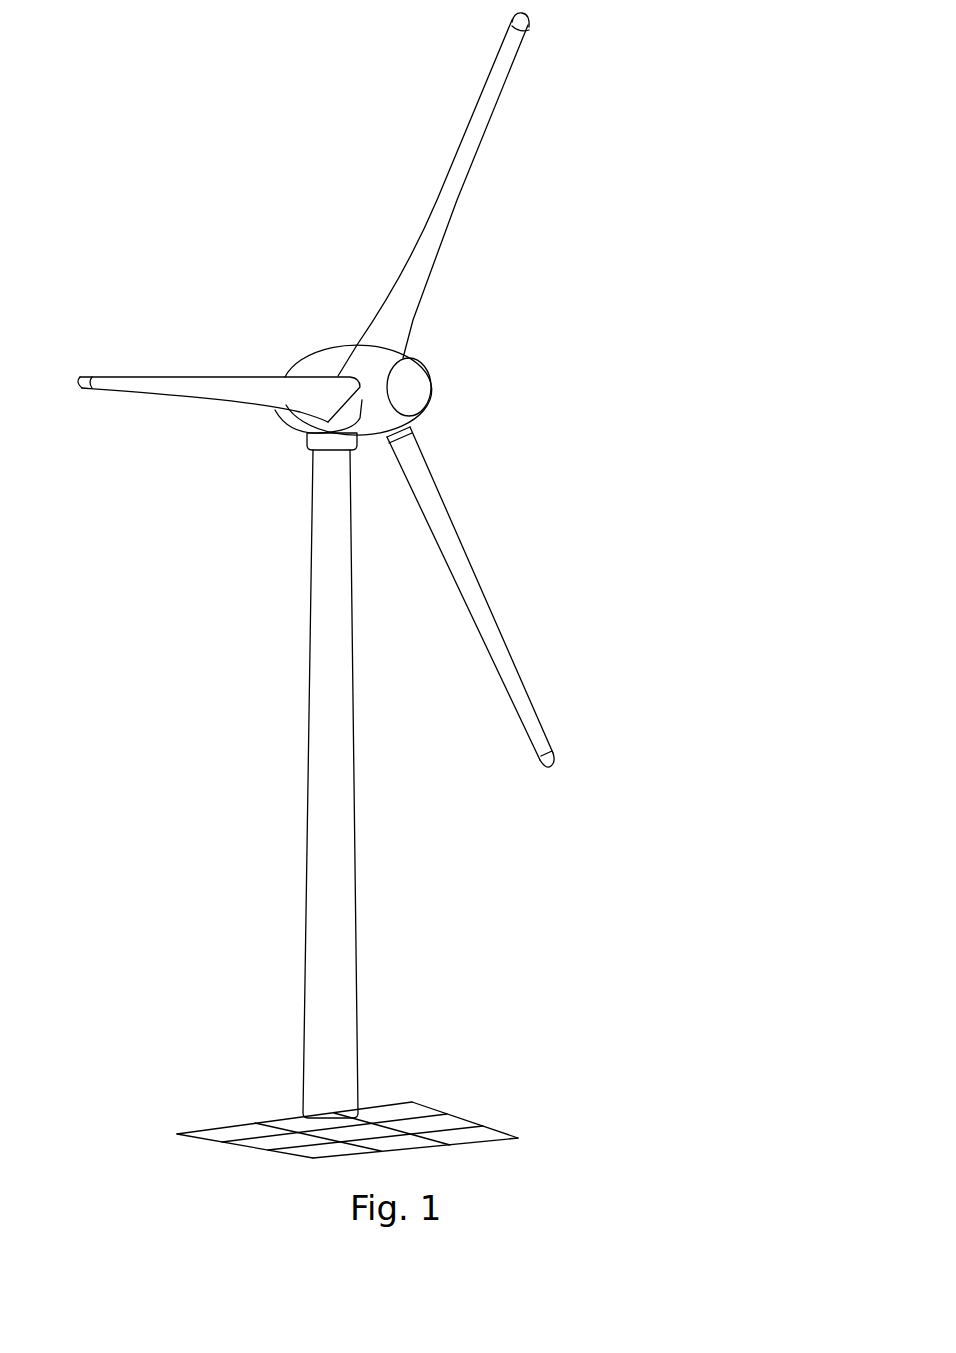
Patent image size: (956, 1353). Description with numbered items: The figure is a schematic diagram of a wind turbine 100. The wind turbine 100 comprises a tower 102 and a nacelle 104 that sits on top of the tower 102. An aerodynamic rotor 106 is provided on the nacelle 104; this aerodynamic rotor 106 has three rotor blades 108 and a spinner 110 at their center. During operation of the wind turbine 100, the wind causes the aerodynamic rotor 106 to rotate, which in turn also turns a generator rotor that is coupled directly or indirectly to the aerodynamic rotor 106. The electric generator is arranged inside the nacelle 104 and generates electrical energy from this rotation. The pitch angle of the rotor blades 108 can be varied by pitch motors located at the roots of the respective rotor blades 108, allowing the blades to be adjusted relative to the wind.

The wind turbine 100 is at (262, 521).
The tower 102 is at (337, 885).
The nacelle 104 is at (325, 362).
The aerodynamic rotor 106 is at (503, 306).
The rotor blades 108 is at (473, 143).
The spinner 110 is at (413, 392).